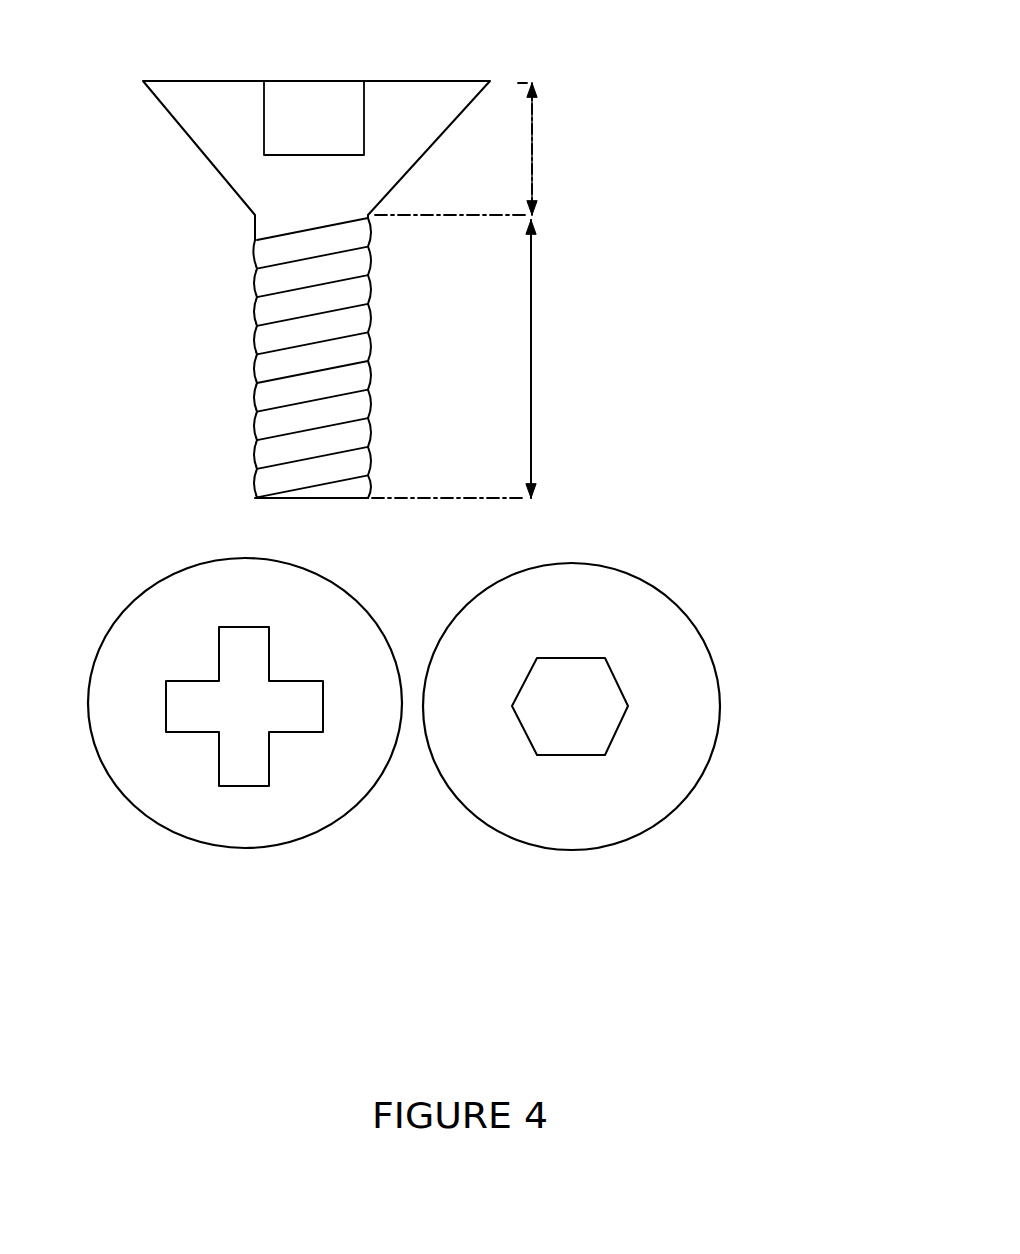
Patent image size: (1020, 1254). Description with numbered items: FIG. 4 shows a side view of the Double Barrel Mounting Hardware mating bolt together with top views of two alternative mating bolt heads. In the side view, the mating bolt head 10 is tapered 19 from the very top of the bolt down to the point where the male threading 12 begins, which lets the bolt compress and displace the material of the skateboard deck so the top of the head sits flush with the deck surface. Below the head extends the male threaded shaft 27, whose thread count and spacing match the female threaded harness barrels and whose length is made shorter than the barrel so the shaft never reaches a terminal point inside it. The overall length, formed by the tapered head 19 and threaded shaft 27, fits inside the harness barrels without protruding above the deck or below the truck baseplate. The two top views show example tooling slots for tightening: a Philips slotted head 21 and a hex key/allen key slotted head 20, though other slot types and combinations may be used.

The mating bolt head 10 is at (404, 486).
The male threading 12 is at (223, 356).
The taper of the mating bolt head 19 is at (532, 149).
The male threaded shaft 27 is at (516, 359).
The Philips slotted head 21 is at (233, 783).
The hex key/allen key slotted head 20 is at (661, 730).